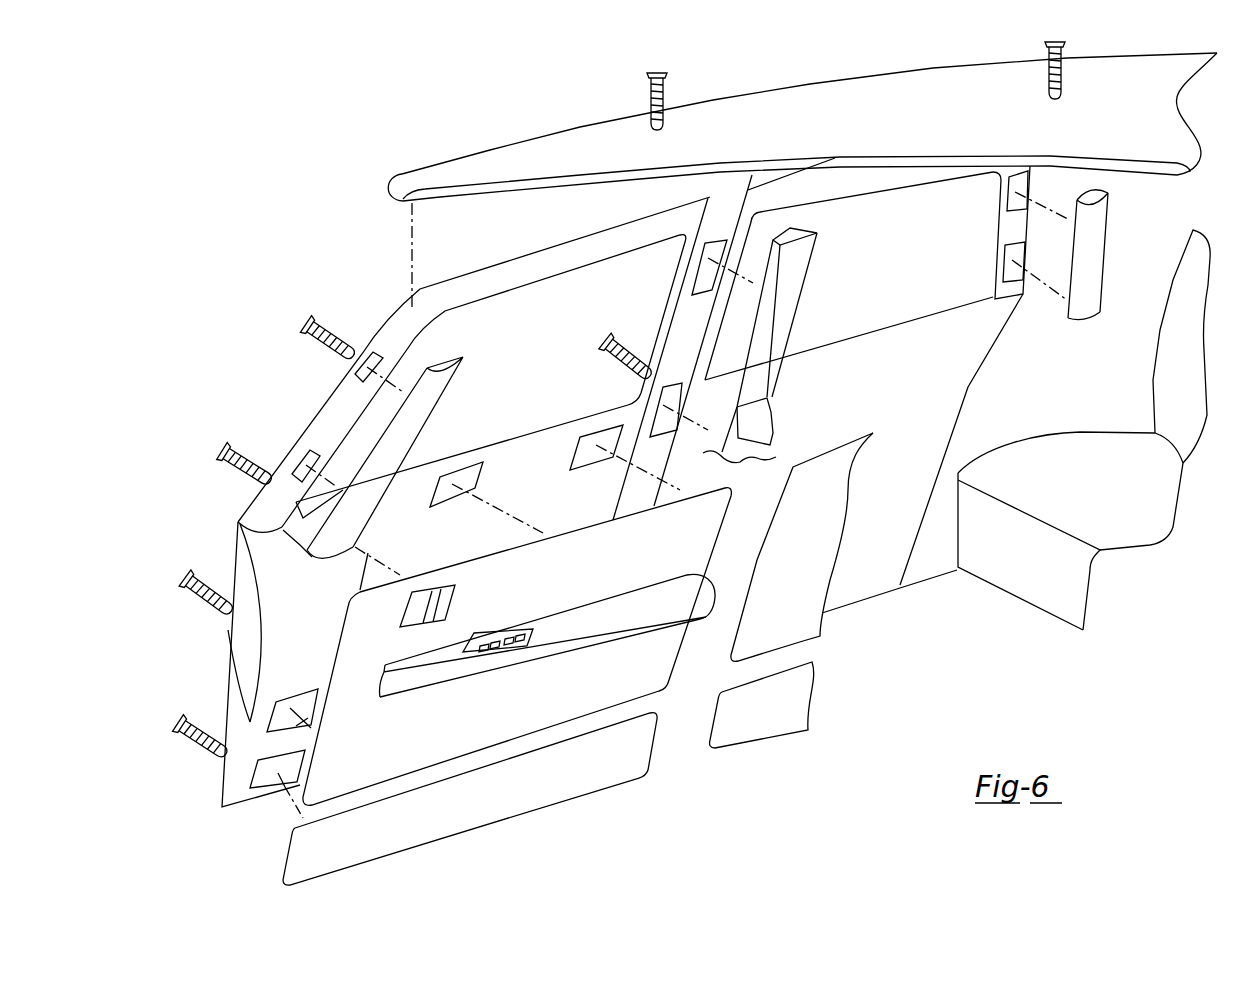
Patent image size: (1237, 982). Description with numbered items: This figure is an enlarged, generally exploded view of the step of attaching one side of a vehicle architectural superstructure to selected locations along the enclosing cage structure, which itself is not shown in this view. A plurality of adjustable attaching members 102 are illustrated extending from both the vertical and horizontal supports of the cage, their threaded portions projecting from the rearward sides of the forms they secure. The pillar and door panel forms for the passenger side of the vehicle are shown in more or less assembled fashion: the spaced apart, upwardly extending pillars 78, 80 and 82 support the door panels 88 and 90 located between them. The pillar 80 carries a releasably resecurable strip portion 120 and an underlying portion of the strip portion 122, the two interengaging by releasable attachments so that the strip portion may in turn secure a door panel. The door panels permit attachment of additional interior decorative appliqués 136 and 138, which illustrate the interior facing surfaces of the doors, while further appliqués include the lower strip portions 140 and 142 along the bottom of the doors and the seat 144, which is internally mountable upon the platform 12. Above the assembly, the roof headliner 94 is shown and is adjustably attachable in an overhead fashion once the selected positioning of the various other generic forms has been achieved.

The platform 12 is at (971, 699).
The vehicle pillar 78 is at (322, 405).
The vehicle pillar 80 is at (672, 300).
The vehicle pillar 82 is at (998, 212).
The door panel 88 is at (551, 507).
The door panel 90 is at (914, 388).
The roof headliner 94 is at (971, 117).
The attaching member 102 is at (203, 578).
The strip portion 120 is at (700, 230).
The underlying portion of the strip portion 122 is at (790, 303).
The interior decorative appliqué 136 is at (561, 604).
The interior decorative appliqué 138 is at (814, 552).
The lower strip portion 140 is at (514, 804).
The lower strip portion 142 is at (777, 722).
The seat 144 is at (1067, 505).